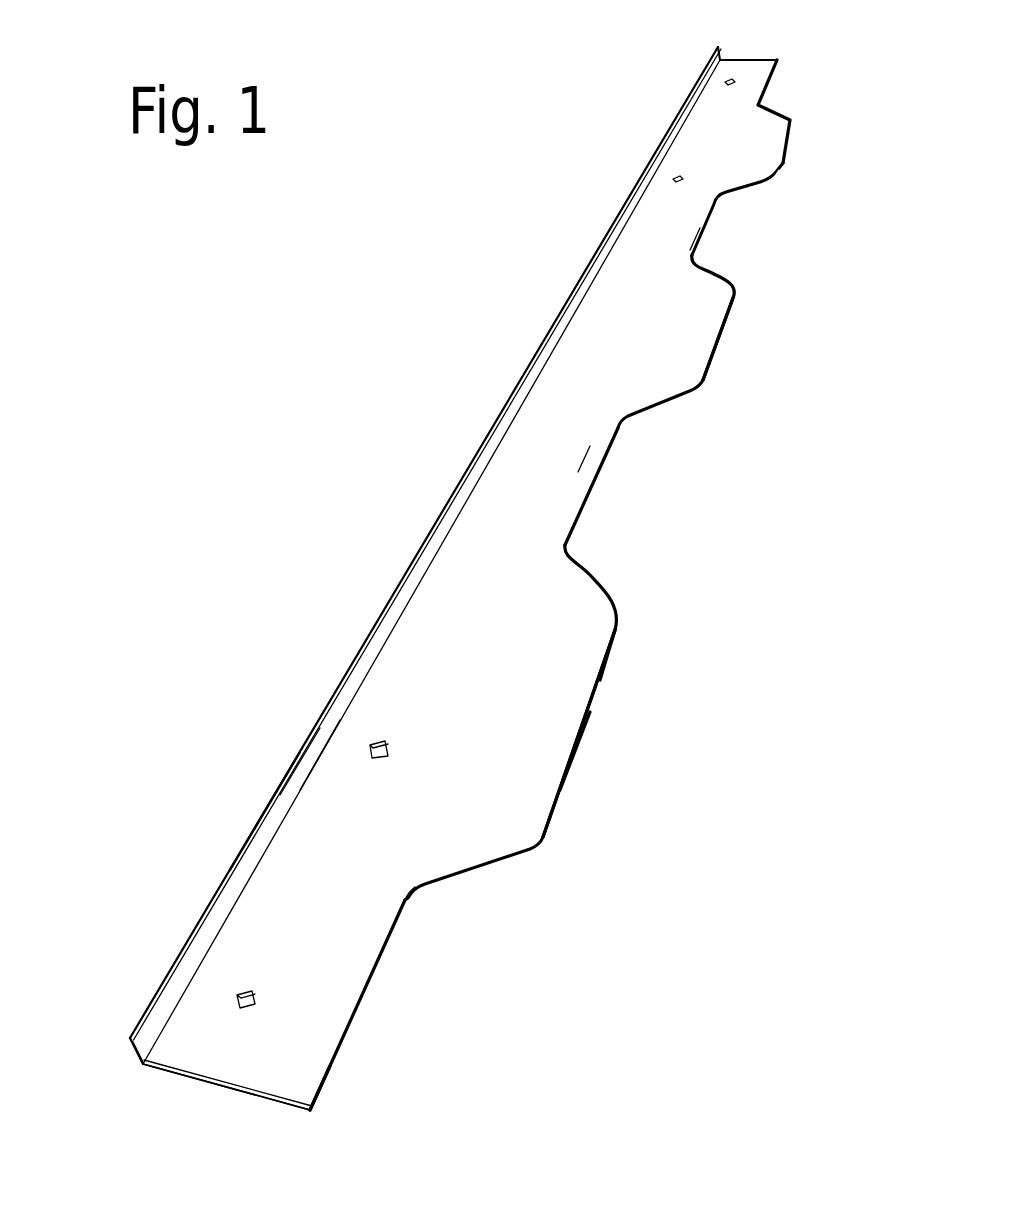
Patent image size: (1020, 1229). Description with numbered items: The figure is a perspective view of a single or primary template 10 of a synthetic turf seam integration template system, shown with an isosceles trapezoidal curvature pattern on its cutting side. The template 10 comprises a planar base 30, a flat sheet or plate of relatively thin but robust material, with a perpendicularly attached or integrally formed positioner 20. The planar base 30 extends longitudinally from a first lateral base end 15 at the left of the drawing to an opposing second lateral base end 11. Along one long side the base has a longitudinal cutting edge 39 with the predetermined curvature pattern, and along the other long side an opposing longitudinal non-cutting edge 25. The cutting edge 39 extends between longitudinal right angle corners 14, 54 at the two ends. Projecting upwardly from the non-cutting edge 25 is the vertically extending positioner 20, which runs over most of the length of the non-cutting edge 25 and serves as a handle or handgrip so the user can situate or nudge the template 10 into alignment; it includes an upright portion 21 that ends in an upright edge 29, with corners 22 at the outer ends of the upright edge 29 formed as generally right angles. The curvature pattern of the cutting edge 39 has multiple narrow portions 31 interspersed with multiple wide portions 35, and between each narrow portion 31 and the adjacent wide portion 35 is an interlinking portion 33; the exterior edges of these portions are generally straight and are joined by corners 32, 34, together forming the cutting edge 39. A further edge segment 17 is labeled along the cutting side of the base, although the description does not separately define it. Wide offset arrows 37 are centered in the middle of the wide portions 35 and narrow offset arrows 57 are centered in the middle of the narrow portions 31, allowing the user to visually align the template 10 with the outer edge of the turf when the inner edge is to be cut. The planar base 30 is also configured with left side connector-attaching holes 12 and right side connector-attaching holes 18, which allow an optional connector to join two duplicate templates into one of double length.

The template 10 is at (368, 365).
The second lateral base end 11 is at (747, 60).
The left side connector-attaching holes 12 is at (375, 745).
The right angle corner 14 is at (315, 1110).
The first lateral base end 15 is at (237, 1092).
The edge portion 17 is at (572, 763).
The right side connector-attaching holes 18 is at (727, 80).
The positioner 20 is at (137, 1058).
The upright portion 21 is at (277, 815).
The corners 22 is at (130, 1038).
The non-cutting edge 25 is at (318, 760).
The upright edge 29 is at (295, 757).
The planar base 30 is at (200, 1093).
The narrow portions 31 is at (595, 493).
The corner 32 is at (532, 852).
The interlinking portion 33 is at (673, 422).
The corner 34 is at (410, 890).
The wide portions 35 is at (732, 362).
The wide offset arrows 37 is at (775, 145).
The cutting edge 39 is at (608, 657).
The right angle corner 54 is at (777, 60).
The narrow offset arrows 57 is at (703, 220).